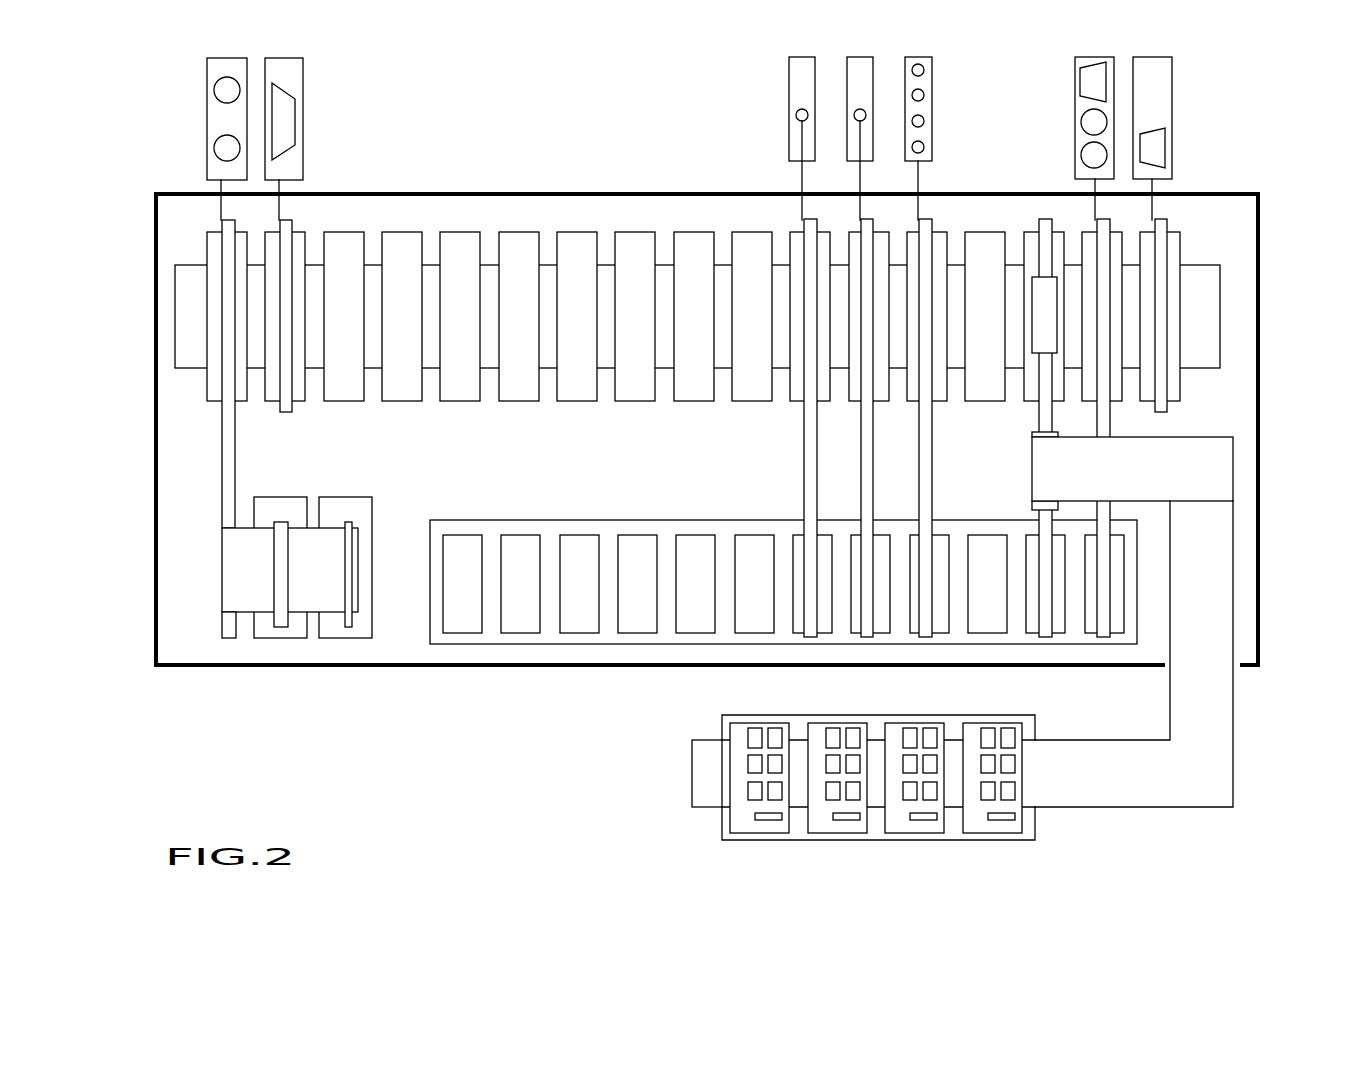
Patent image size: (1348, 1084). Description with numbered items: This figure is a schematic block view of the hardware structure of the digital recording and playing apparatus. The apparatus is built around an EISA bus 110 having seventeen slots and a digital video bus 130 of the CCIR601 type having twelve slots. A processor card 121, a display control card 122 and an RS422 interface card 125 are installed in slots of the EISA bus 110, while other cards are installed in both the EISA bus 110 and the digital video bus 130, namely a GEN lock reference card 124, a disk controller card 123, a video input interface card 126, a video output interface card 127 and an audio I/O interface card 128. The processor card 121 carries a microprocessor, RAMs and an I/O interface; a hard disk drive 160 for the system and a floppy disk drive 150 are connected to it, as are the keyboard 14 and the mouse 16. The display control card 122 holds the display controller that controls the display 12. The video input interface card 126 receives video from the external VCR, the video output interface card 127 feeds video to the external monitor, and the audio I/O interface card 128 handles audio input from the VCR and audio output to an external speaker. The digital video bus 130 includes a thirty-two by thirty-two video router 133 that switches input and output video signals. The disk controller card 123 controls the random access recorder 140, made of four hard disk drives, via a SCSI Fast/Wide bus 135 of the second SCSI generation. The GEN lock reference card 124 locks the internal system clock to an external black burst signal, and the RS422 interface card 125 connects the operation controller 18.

The display 12 is at (285, 122).
The keyboard 14 is at (215, 148).
The mouse 16 is at (217, 87).
The operation controller 18 is at (1167, 152).
The EISA bus 110 is at (1205, 307).
The processor card 121 is at (229, 640).
The display control card 122 is at (298, 387).
The disk controller card 123 is at (1037, 385).
The GEN lock reference card 124 is at (1093, 222).
The RS422 interface card 125 is at (1167, 222).
The video input interface card 126 is at (808, 640).
The video output interface card 127 is at (867, 640).
The audio I/O interface card 128 is at (928, 640).
The digital video bus 130 is at (1073, 645).
The video router 133 is at (787, 528).
The SCSI-2 Fast/Wide bus 135 is at (690, 792).
The random access recorder 140 is at (1037, 820).
The floppy disk drive 150 is at (353, 634).
The hard disk drive 160 is at (289, 634).